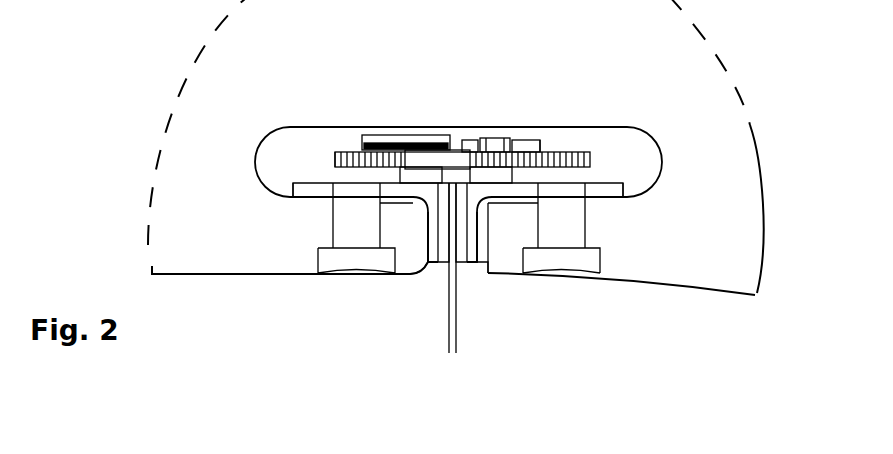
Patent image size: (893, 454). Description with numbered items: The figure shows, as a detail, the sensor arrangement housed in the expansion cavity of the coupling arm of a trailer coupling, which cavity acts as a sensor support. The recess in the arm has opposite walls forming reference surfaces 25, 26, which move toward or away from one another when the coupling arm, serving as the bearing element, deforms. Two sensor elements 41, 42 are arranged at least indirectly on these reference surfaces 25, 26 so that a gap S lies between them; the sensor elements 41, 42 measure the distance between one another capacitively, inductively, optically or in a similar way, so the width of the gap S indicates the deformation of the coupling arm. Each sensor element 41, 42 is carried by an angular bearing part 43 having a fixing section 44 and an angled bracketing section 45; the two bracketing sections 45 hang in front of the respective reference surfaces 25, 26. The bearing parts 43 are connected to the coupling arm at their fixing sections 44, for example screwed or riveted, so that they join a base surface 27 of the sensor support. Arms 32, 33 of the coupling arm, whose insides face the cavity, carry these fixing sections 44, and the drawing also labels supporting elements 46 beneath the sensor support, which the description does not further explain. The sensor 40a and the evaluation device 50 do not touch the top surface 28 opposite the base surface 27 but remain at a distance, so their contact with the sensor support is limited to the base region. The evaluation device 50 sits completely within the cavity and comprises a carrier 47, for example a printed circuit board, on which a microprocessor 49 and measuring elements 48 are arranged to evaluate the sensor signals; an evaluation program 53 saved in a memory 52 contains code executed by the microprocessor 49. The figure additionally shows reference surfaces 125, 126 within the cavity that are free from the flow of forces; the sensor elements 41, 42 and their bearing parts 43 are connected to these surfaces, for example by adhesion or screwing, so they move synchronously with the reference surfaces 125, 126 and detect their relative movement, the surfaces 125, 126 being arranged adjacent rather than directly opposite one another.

The reference surface 25 is at (428, 264).
The reference surface 26 is at (485, 272).
The base surface 27 is at (636, 195).
The top surface 28 is at (293, 128).
The arm 32 is at (305, 240).
The arm 33 is at (600, 230).
The sensor 40a is at (484, 234).
The sensor element 41 is at (449, 266).
The sensor element 42 is at (458, 266).
The bearing part 43 is at (307, 190).
The fixing section 44 is at (312, 183).
The bracketing section 45 is at (433, 228).
The support leg 46 is at (367, 183).
The carrier 47 is at (340, 152).
The measuring element 48 is at (523, 140).
The microprocessor 49 is at (398, 140).
The evaluation device 50 is at (460, 137).
The memory 52 is at (473, 140).
The evaluation program 53 is at (498, 138).
The reference surface 125 is at (367, 143).
The reference surface 126 is at (537, 145).
The gap S is at (492, 343).